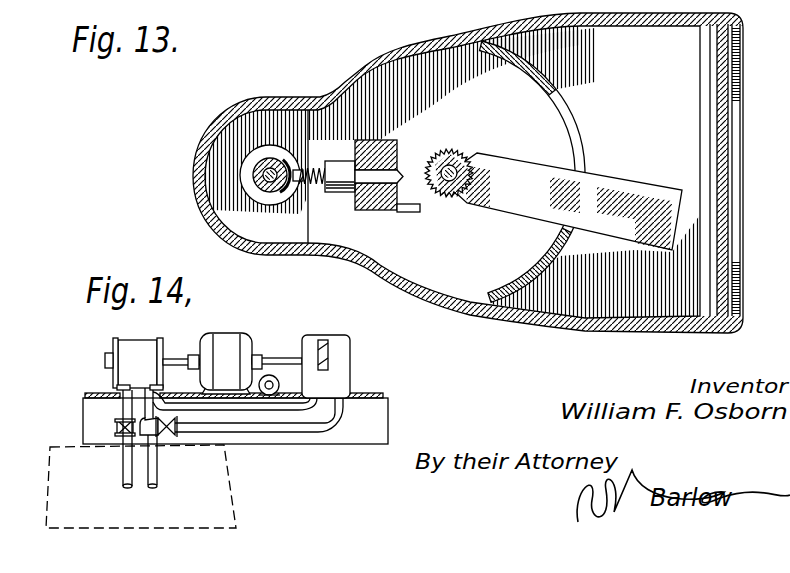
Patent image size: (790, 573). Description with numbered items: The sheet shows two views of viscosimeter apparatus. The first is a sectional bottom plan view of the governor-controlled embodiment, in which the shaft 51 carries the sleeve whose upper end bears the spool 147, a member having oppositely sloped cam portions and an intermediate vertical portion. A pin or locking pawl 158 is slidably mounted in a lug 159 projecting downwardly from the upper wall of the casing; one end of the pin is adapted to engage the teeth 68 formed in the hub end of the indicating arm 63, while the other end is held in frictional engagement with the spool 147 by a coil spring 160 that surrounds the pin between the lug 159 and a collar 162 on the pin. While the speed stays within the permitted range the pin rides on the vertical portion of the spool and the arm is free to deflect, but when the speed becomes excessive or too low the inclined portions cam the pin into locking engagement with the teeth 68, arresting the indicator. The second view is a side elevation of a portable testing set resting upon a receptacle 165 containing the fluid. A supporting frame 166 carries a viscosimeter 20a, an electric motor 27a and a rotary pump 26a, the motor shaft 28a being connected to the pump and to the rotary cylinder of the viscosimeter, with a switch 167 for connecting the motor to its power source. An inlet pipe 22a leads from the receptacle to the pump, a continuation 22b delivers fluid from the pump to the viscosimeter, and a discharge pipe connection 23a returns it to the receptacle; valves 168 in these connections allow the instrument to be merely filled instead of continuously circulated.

In FIG. 13, the shaft 51 is at (279, 186).
In FIG. 13, the arm 63 is at (608, 190).
In FIG. 13, the teeth 68 is at (455, 137).
In FIG. 13, the spool 147 is at (270, 160).
In FIG. 13, the locking pawl 158 is at (396, 158).
In FIG. 13, the lug 159 is at (337, 161).
In FIG. 13, the coil spring 160 is at (315, 184).
In FIG. 13, the collar 162 is at (305, 180).
In FIG. 14, the viscosimeter 20a is at (313, 331).
In FIG. 14, the inlet pipe 22a is at (125, 467).
In FIG. 14, the continuation of inlet pipe 22b is at (243, 412).
In FIG. 14, the discharge pipe connection 23a is at (347, 437).
In FIG. 14, the rotary pump 26a is at (135, 350).
In FIG. 14, the electric motor 27a is at (228, 340).
In FIG. 14, the motor shaft 28a is at (275, 355).
In FIG. 14, the receptacle 165 is at (233, 512).
In FIG. 14, the supporting frame 166 is at (380, 410).
In FIG. 14, the switch 167 is at (282, 385).
In FIG. 14, the valves 168 is at (117, 423).